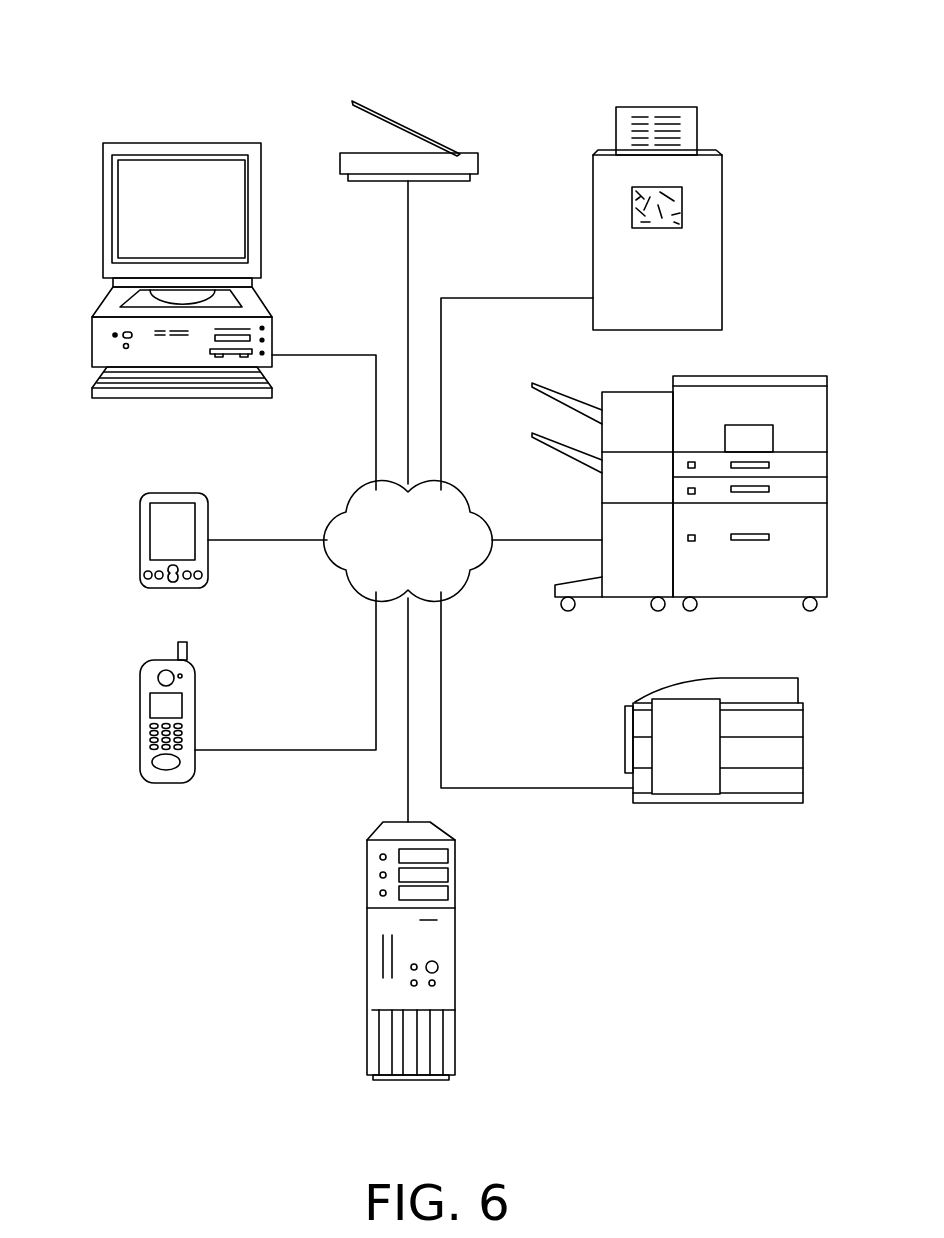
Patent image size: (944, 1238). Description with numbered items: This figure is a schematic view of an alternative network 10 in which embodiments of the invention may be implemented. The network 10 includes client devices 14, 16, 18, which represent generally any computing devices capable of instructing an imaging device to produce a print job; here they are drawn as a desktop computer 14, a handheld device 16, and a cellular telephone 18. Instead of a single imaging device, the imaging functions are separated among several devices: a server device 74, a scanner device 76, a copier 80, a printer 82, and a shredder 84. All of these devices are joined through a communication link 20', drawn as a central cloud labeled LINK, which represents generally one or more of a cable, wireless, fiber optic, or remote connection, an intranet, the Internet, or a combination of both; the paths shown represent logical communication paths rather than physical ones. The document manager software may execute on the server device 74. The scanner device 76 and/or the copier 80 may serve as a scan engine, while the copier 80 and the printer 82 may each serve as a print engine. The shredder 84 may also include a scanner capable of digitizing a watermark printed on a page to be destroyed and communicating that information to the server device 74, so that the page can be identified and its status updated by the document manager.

The network 10 is at (198, 72).
The client device 14 is at (107, 229).
The client device 16 is at (142, 551).
The client device 18 is at (145, 752).
The communication link 20' is at (418, 534).
The server device 74 is at (445, 992).
The scanner device 76 is at (413, 131).
The copier 80 is at (745, 382).
The printer 82 is at (757, 683).
The shredder 84 is at (606, 230).